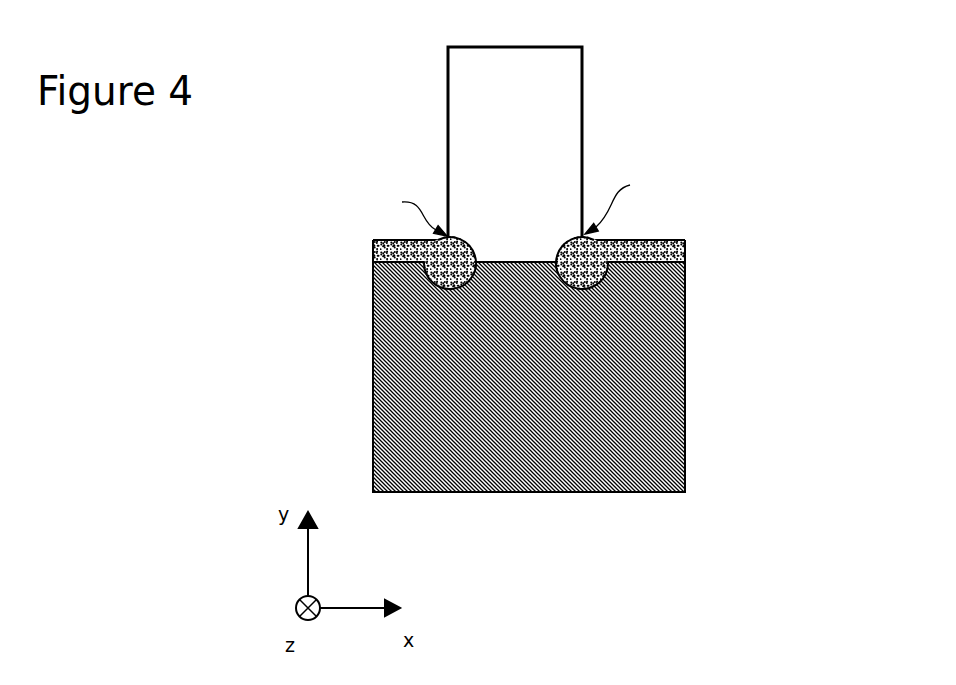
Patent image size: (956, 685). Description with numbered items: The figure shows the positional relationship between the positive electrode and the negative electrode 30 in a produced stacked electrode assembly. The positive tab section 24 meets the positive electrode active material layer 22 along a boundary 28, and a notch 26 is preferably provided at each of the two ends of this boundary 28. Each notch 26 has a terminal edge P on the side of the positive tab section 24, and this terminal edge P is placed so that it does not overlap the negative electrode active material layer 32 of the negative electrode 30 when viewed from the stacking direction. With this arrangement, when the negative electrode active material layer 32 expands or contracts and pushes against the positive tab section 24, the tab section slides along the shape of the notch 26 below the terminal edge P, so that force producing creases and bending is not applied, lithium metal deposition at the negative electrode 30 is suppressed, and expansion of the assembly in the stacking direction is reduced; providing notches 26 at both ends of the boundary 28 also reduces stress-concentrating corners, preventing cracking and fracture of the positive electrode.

The positive electrode active material layer 22 is at (380, 386).
The positive tab section 24 is at (457, 97).
The notch 26 is at (430, 278).
The boundary 28 is at (515, 260).
The negative electrode 30 is at (467, 249).
The negative electrode active material layer 32 is at (373, 258).
The terminal edge P is at (516, 202).